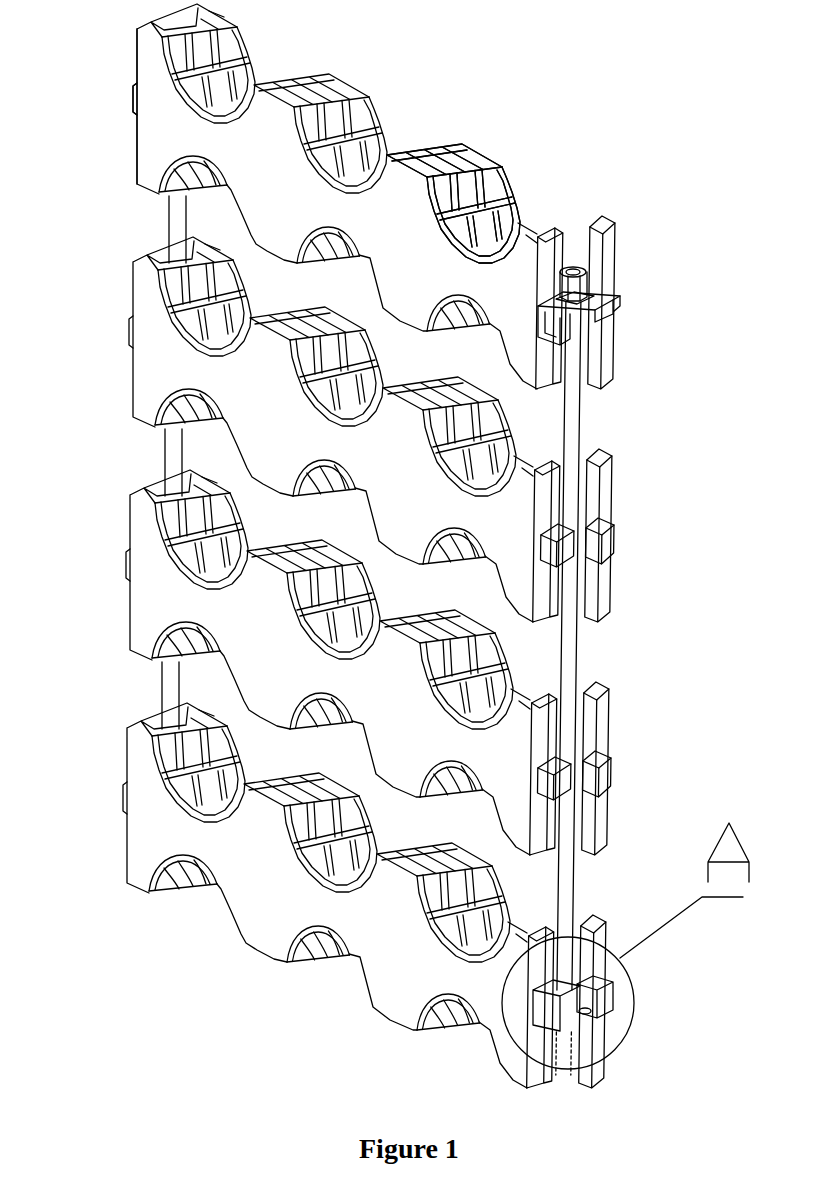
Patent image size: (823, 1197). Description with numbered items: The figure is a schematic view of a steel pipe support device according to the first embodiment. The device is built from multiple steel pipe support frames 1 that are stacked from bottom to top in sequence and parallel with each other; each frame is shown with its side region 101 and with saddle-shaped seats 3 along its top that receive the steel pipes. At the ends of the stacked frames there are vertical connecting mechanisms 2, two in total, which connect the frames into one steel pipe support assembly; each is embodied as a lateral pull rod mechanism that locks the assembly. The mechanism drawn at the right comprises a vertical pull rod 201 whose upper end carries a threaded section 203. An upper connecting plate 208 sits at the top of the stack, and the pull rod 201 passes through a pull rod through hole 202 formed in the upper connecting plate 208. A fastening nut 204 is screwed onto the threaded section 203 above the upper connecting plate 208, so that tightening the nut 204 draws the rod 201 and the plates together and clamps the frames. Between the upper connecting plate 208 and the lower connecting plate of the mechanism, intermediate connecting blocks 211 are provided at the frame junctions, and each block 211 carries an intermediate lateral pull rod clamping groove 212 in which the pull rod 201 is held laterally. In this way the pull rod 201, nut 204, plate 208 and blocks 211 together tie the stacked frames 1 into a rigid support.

The cable holder block 1 is at (380, 108).
The side wall 101 is at (175, 132).
The cable saddle 3 is at (508, 187).
The vertical connecting mechanism 2 is at (575, 647).
The pull rod 201 is at (578, 402).
The pull rod through hole 202 is at (560, 307).
The threaded section 203 is at (577, 270).
The fastening nut 204 is at (588, 282).
The upper connecting plate 208 is at (594, 302).
The intermediate connecting block 211 is at (602, 547).
The intermediate lateral pull rod clamping groove 212 is at (588, 533).